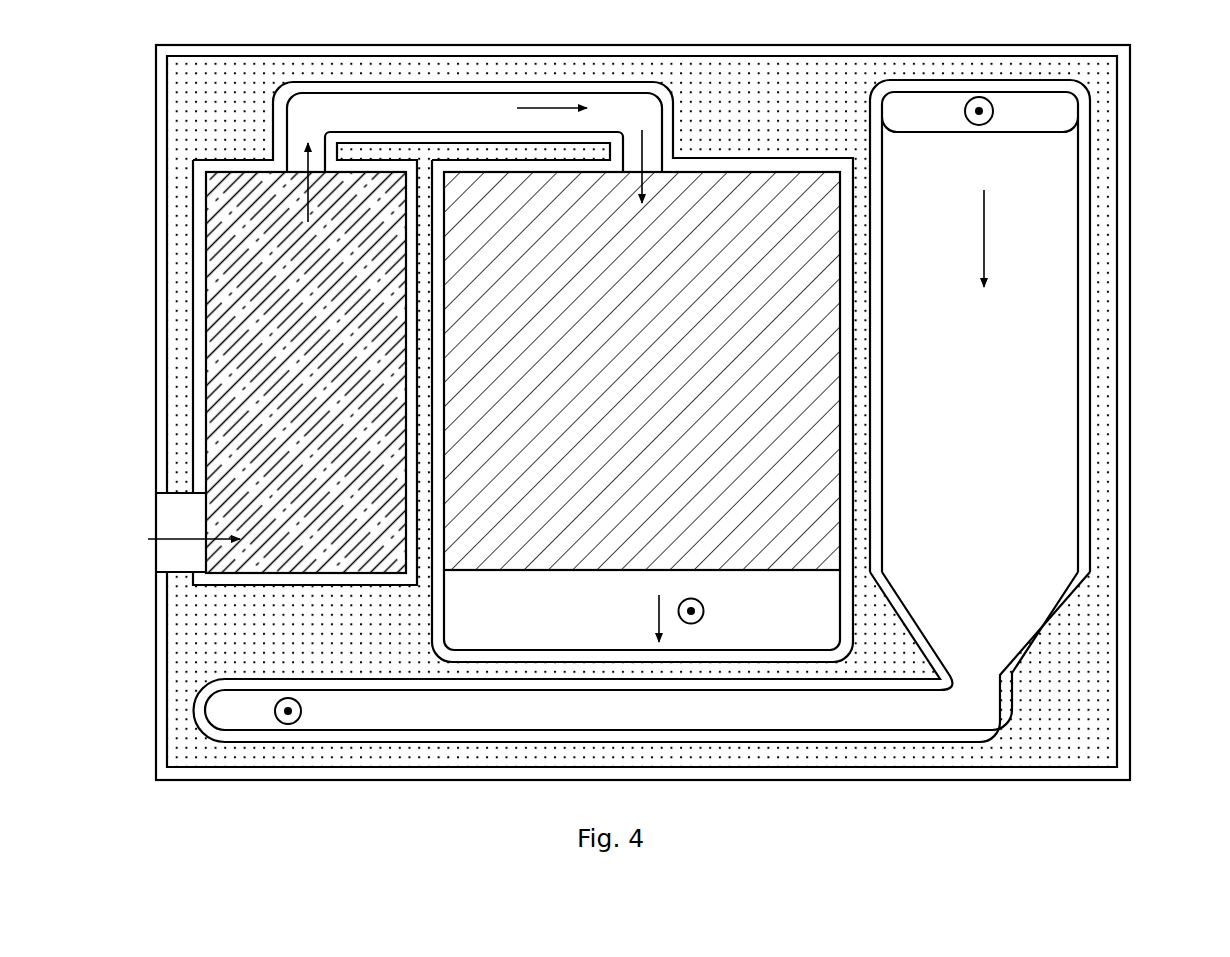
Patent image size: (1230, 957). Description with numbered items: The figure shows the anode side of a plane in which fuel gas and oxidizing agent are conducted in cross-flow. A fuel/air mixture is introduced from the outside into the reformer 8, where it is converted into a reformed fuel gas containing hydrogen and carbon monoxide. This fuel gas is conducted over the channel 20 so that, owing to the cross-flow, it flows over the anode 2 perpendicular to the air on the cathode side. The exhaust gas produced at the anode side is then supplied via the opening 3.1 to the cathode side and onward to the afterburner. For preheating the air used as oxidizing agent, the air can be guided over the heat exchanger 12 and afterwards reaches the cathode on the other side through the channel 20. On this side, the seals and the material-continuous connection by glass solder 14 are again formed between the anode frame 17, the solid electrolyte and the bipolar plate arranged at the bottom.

The anode 2 is at (631, 435).
The opening 3.1 is at (733, 618).
The reformer 8 is at (314, 458).
The heat exchanger 12 is at (985, 425).
The glass solder 14 is at (1053, 673).
The anode frame 17 is at (1123, 594).
The channel 20 is at (365, 110).